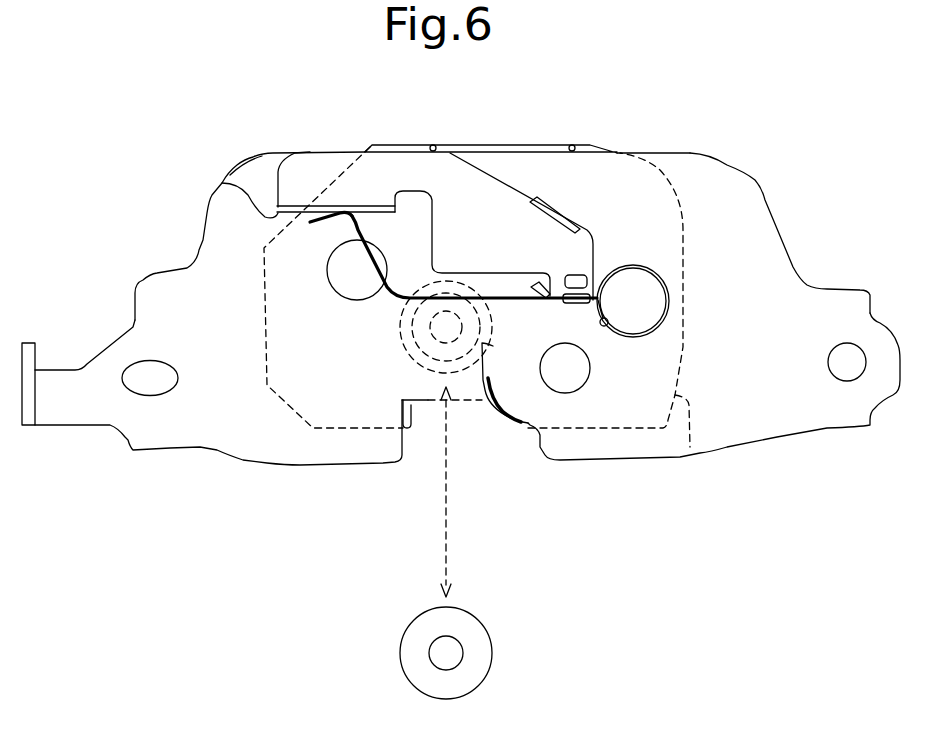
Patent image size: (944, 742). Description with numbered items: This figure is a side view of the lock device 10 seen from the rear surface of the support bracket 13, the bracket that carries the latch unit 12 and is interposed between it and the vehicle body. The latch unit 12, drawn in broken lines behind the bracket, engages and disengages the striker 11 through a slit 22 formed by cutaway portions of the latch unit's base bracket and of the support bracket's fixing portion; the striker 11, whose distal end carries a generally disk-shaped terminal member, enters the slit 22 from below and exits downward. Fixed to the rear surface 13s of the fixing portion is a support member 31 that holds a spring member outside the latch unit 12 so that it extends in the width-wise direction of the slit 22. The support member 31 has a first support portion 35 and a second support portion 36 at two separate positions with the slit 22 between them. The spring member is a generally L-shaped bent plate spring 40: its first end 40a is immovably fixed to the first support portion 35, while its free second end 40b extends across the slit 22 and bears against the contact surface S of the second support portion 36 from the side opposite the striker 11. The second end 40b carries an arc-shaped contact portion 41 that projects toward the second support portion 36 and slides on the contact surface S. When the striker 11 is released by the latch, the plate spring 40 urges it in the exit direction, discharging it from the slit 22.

The lock device 10 is at (83, 138).
The support bracket 13 is at (157, 274).
The rear surface 13s is at (728, 168).
The second support portion 36 is at (282, 175).
The contact surface S is at (222, 183).
The arc-shaped contact portion 41 is at (343, 207).
The support member 31 is at (480, 166).
The first support portion 35 is at (593, 257).
The plate spring 40 is at (400, 305).
The first end 40a is at (551, 300).
The second end 40b is at (312, 226).
The slit 22 is at (512, 493).
The latch unit 12 is at (689, 452).
The striker 11 is at (488, 618).